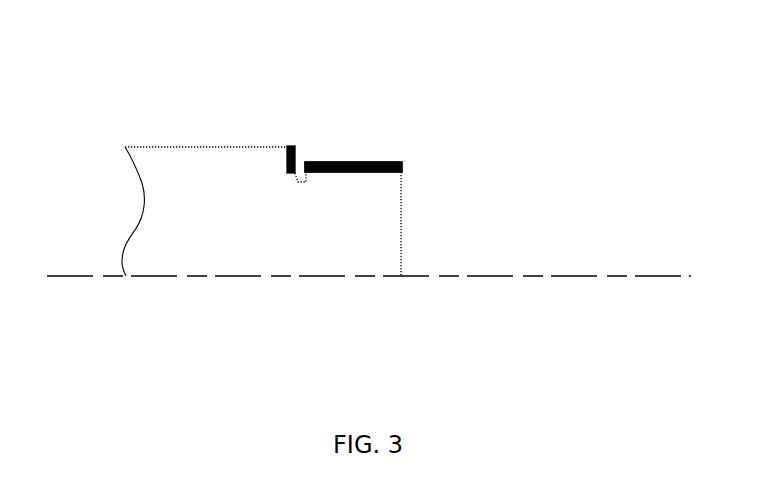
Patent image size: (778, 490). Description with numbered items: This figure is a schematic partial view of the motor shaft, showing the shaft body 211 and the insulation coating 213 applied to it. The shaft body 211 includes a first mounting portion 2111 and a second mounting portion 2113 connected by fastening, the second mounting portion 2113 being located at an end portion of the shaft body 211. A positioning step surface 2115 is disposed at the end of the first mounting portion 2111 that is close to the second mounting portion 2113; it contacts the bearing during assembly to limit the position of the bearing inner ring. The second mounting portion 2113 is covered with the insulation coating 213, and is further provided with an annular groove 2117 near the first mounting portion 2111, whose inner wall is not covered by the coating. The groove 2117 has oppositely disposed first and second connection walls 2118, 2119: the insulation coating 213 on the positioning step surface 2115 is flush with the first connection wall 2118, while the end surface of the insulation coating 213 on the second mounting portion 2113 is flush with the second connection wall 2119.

The shaft body 211 is at (359, 265).
The first mounting portion 2111 is at (253, 163).
The second mounting portion 2113 is at (386, 186).
The positioning step surface 2115 is at (293, 146).
The groove 2117 is at (419, 113).
The first connection wall 2118 is at (298, 181).
The second connection wall 2119 is at (307, 170).
The insulation coating 213 is at (398, 161).